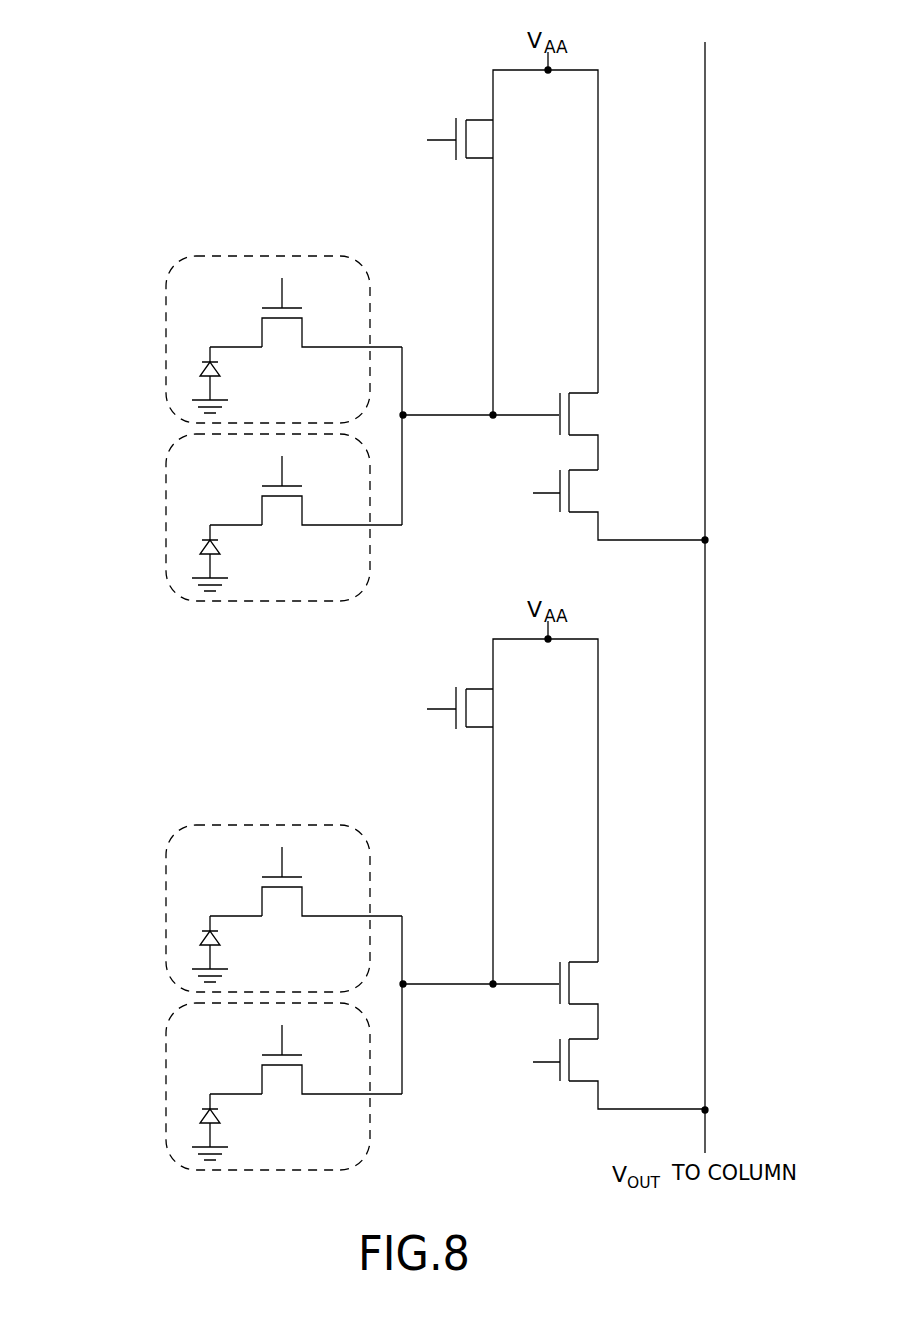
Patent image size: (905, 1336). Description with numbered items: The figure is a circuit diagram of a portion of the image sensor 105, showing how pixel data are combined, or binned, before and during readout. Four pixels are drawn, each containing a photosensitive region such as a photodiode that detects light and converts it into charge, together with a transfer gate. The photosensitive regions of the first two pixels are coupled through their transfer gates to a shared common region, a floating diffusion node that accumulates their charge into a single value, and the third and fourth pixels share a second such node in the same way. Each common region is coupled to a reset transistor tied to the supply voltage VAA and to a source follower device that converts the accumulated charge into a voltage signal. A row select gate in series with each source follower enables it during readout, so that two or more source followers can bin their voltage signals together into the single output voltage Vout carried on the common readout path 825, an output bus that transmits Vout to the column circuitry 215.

The image sensor 105 is at (150, 98).
The common readout path 825 is at (706, 170).
The column circuitry 215 is at (780, 1217).